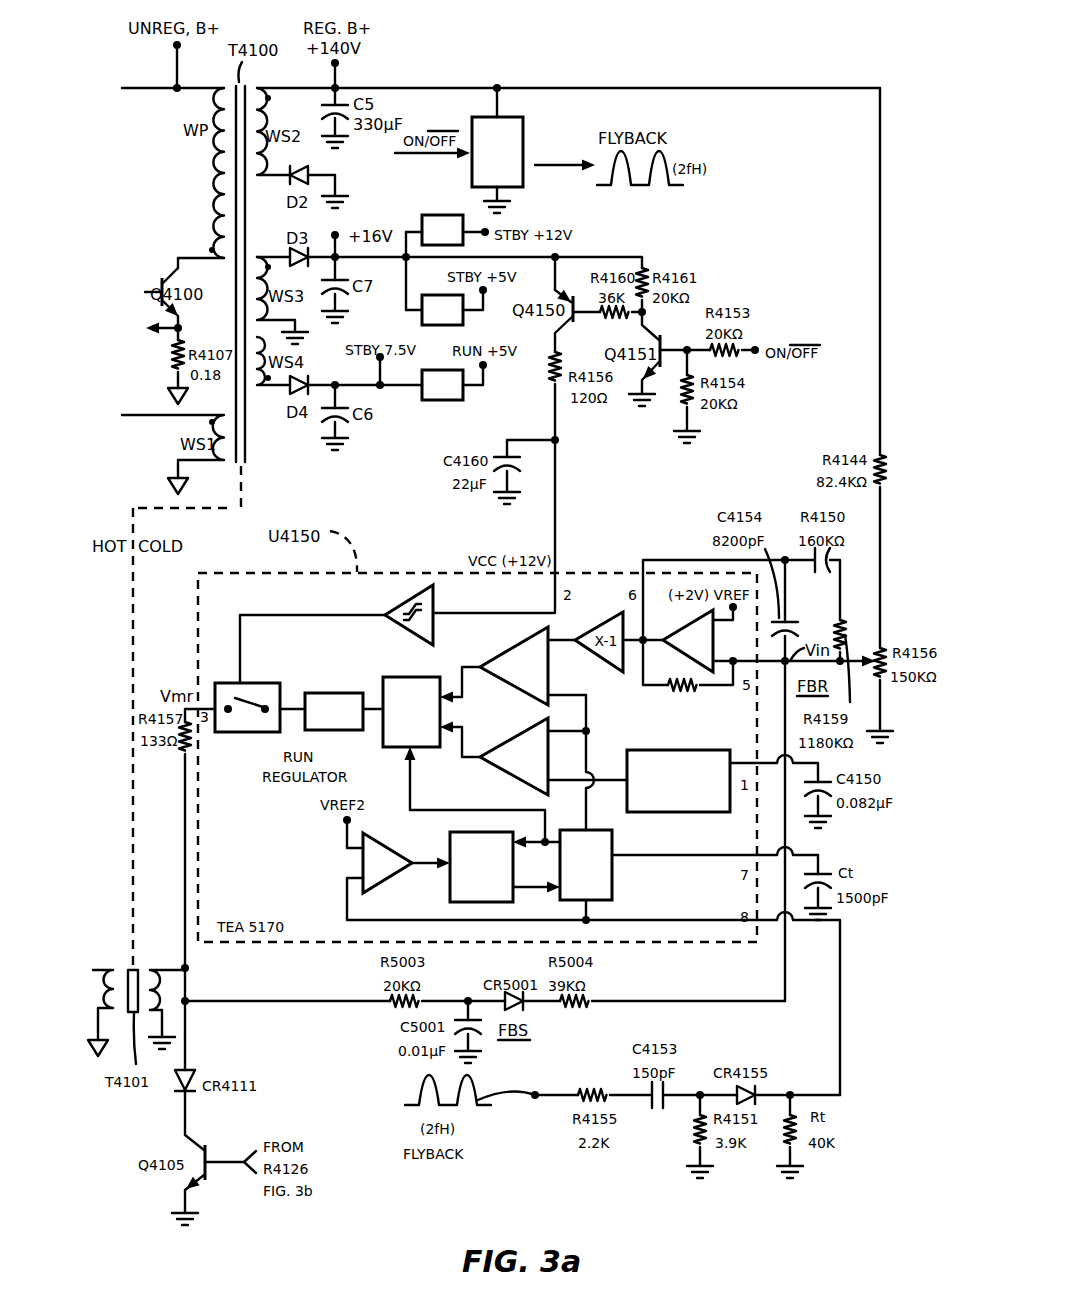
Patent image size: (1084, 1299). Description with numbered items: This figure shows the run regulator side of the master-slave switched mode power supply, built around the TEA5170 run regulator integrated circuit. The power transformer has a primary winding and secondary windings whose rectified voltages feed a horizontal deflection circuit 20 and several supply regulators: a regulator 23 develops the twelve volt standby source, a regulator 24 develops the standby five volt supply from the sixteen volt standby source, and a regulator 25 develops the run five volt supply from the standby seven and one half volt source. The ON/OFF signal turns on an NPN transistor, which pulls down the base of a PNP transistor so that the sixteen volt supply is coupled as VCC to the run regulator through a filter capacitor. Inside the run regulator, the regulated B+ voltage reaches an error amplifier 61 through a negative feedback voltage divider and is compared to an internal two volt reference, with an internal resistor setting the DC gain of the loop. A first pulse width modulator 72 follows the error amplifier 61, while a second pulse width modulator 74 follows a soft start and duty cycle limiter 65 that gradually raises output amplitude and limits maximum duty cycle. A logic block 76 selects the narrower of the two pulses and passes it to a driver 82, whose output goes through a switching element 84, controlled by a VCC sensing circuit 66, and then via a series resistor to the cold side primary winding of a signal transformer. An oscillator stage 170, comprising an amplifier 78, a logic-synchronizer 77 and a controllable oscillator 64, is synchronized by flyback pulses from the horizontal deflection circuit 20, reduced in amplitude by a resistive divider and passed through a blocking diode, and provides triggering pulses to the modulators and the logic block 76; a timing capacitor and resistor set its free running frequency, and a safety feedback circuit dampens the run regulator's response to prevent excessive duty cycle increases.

The horizontal deflection circuit 20 is at (524, 122).
The regulator 23 is at (437, 215).
The regulator 24 is at (412, 302).
The regulator 25 is at (440, 403).
The error amplifier 61 is at (690, 626).
The controllable oscillator 64 is at (612, 880).
The soft start and duty cycle limiter 65 is at (680, 814).
The VCC sensing circuit 66 is at (396, 608).
The first pulse width modulator 72 is at (505, 652).
The second pulse width modulator 74 is at (508, 773).
The logic block 76 is at (409, 677).
The logic-synchronizer 77 is at (450, 846).
The amplifier 78 is at (404, 876).
The driver 82 is at (334, 693).
The switching element 84 is at (262, 683).
The oscillator stage 170 is at (549, 917).